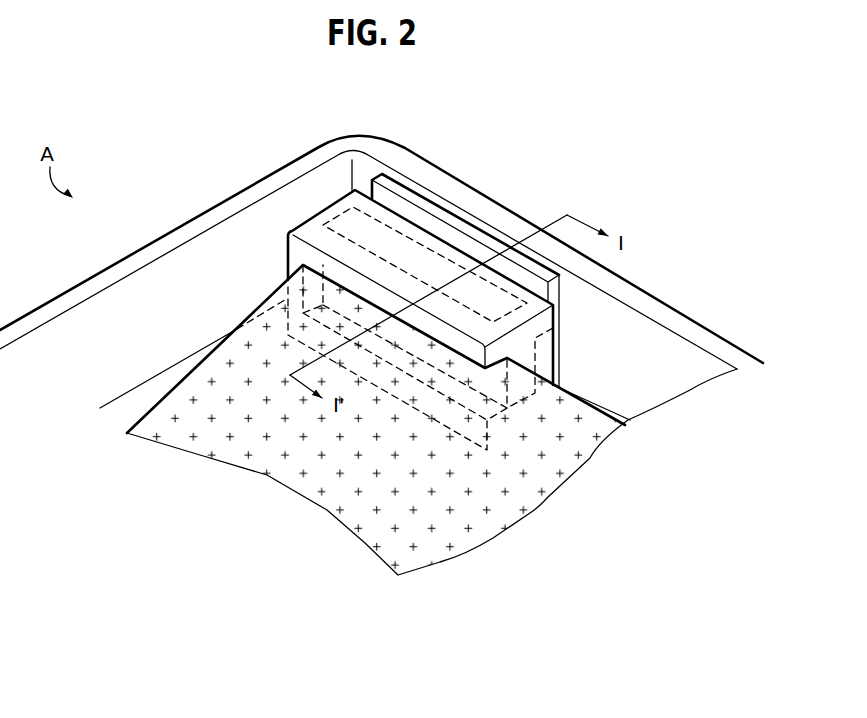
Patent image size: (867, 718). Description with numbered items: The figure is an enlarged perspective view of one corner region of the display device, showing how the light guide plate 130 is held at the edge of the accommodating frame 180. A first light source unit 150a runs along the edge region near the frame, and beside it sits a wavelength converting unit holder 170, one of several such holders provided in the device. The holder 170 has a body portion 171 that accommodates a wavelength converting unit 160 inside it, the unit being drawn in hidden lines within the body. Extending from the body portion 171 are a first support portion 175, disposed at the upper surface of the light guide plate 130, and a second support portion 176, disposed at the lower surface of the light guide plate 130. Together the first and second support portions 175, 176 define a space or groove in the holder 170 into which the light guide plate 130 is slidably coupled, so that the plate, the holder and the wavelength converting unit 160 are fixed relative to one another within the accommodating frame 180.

The light guide plate 130 is at (265, 454).
The first light source unit 150a is at (473, 234).
The wavelength converting unit 160 is at (397, 262).
The wavelength converting unit holder 170 is at (500, 588).
The body portion 171 is at (537, 413).
The first support portion 175 is at (555, 385).
The second support portion 176 is at (522, 378).
The accommodating frame 180 is at (643, 352).